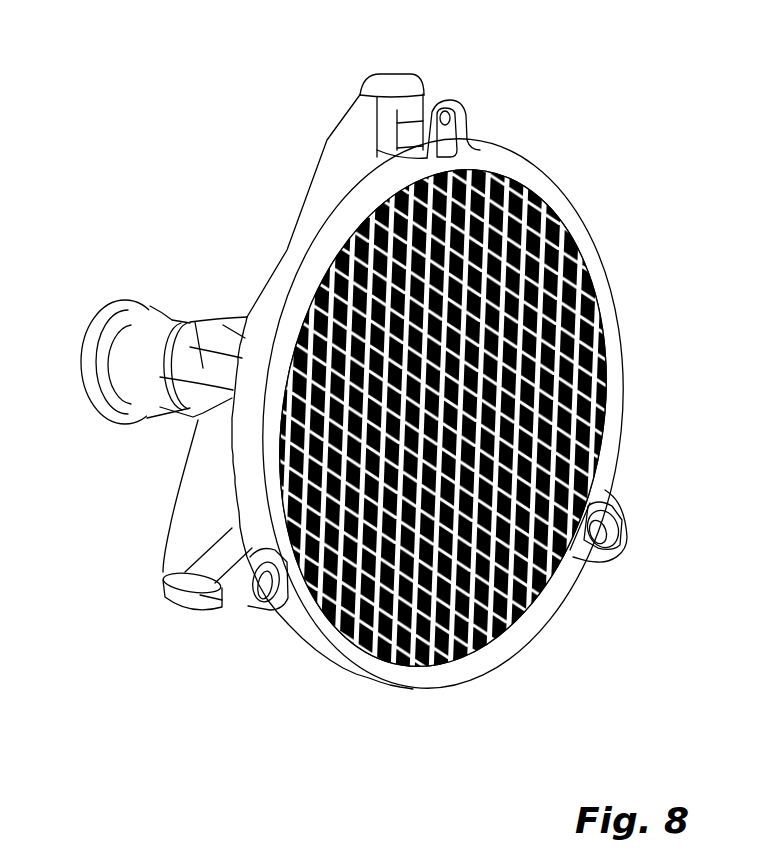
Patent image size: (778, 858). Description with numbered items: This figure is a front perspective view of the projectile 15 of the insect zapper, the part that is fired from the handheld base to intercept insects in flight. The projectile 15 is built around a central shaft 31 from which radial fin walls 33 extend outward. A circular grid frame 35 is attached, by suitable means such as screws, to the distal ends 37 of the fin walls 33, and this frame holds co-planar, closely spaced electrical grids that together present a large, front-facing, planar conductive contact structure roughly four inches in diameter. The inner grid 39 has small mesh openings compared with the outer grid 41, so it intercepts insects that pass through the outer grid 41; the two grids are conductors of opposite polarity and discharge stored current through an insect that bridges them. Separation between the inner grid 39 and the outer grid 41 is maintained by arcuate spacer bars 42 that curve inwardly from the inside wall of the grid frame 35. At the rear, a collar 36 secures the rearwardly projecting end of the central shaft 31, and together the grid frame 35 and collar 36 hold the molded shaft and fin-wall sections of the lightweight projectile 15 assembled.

The projectile 15 is at (385, 400).
The central shaft 31 is at (197, 318).
The radial fin walls 33 is at (197, 500).
The circular grid frame 35 is at (523, 173).
The collar 36 is at (131, 385).
The distal ends of the fin walls 37 is at (397, 83).
The inner grid 39 is at (480, 454).
The outer grid 41 is at (602, 335).
The arcuate spacer bars 42 is at (593, 400).